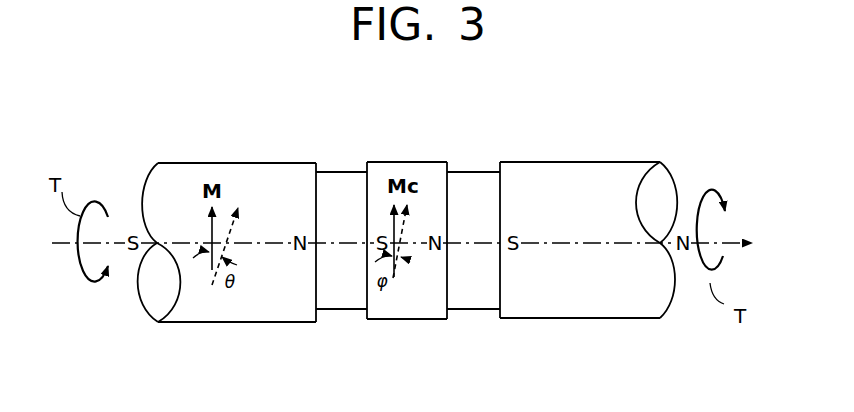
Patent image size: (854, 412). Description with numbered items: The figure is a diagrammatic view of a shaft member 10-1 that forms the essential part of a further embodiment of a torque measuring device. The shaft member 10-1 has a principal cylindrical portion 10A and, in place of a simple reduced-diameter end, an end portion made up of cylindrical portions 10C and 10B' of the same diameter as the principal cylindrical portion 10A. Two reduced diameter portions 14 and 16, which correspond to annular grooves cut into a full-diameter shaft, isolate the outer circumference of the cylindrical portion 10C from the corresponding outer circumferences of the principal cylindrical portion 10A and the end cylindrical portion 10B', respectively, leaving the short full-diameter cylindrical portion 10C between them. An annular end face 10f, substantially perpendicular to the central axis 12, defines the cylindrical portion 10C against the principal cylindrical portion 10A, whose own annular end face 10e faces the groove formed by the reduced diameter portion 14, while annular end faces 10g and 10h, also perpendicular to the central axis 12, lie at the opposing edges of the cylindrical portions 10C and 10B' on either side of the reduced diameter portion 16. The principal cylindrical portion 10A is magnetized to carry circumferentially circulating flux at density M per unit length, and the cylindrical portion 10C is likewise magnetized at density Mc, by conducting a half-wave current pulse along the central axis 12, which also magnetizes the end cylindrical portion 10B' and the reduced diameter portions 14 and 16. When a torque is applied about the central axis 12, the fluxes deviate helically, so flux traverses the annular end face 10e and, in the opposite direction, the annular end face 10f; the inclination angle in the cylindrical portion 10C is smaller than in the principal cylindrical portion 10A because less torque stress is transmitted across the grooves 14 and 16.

The shaft member 10-1 is at (195, 150).
The principal cylindrical portion 10A is at (240, 322).
The end cylindrical portion 10B' is at (588, 271).
The cylindrical portion 10C is at (408, 319).
The annular end face 10e is at (320, 168).
The annular end face 10f is at (367, 165).
The annular end face 10g is at (450, 165).
The annular end face 10h is at (500, 162).
The central axis 12 is at (565, 244).
The reduced diameter portion 14 is at (345, 309).
The reduced diameter portion 16 is at (475, 309).